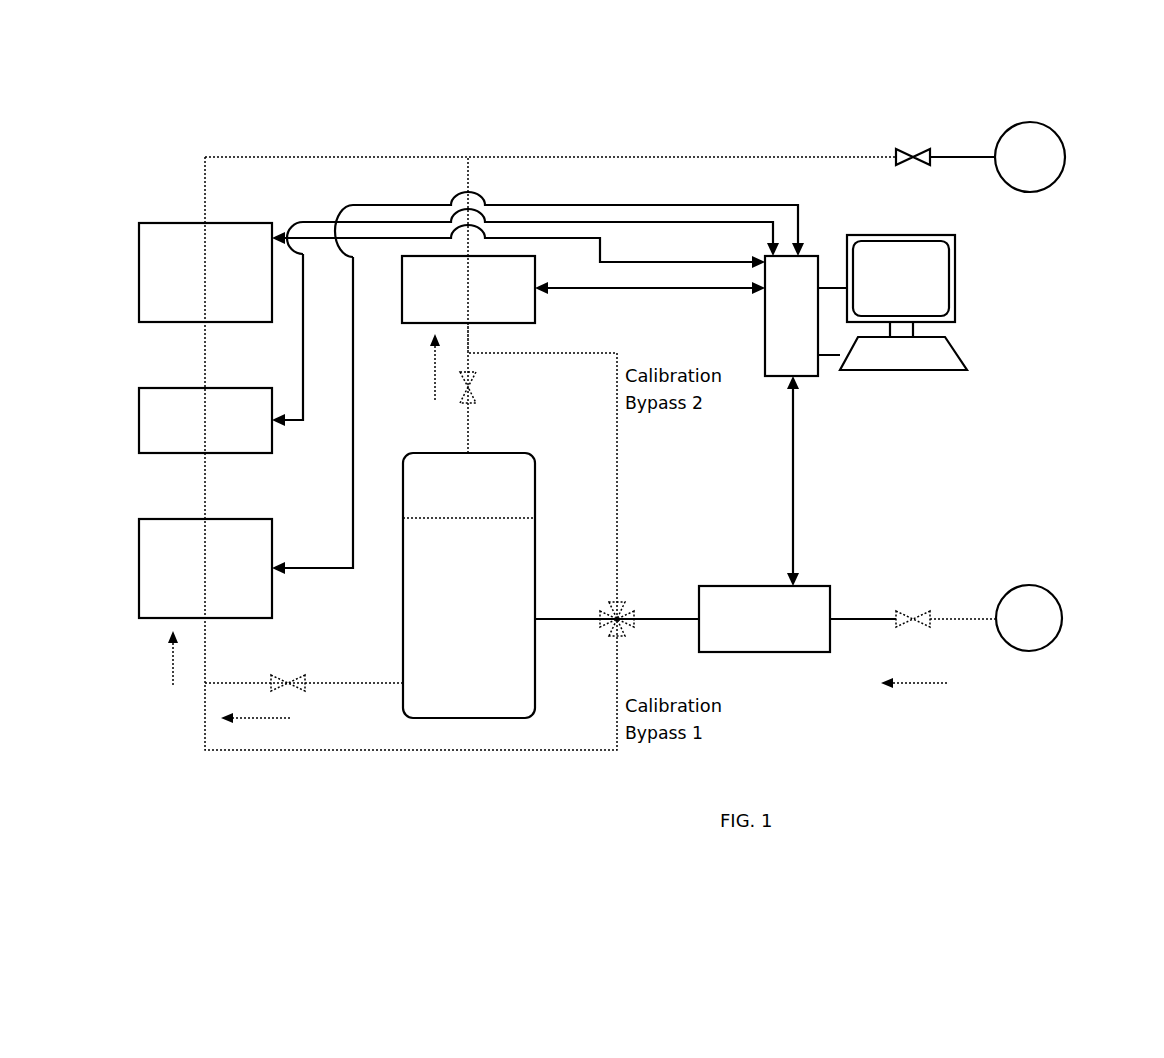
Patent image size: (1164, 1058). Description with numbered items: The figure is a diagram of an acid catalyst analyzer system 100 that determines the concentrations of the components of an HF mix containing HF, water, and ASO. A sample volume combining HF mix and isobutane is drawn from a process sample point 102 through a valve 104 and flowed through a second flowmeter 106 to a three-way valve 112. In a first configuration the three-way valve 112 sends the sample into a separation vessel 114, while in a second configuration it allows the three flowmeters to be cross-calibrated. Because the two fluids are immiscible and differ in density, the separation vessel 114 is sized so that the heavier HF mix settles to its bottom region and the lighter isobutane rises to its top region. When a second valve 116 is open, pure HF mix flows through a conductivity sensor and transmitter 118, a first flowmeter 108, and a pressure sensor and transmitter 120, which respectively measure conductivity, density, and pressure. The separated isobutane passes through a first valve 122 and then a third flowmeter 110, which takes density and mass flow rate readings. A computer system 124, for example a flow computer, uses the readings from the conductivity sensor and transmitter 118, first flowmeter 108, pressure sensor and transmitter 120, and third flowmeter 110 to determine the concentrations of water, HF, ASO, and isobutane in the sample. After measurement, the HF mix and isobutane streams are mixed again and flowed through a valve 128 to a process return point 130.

The acid catalyst analyzer system 100 is at (958, 66).
The process sample point 102 is at (1029, 585).
The valve 104 is at (900, 612).
The second flowmeter 106 is at (815, 586).
The first flowmeter 108 is at (153, 388).
The third flowmeter 110 is at (535, 308).
The 3-way valve 112 is at (622, 626).
The separation vessel 114 is at (535, 545).
The second valve 116 is at (292, 690).
The conductivity sensor and transmitter 118 is at (153, 519).
The pressure sensor and transmitter 120 is at (153, 223).
The first valve 122 is at (470, 405).
The computer system 124 is at (930, 370).
The valve 128 is at (900, 150).
The process return point 130 is at (1030, 122).